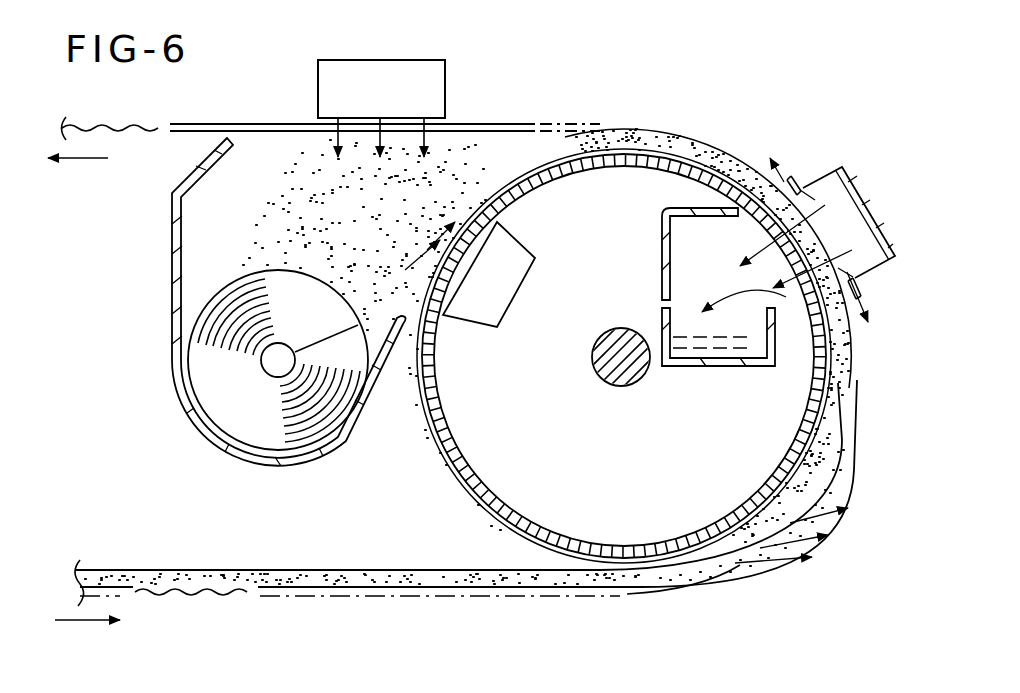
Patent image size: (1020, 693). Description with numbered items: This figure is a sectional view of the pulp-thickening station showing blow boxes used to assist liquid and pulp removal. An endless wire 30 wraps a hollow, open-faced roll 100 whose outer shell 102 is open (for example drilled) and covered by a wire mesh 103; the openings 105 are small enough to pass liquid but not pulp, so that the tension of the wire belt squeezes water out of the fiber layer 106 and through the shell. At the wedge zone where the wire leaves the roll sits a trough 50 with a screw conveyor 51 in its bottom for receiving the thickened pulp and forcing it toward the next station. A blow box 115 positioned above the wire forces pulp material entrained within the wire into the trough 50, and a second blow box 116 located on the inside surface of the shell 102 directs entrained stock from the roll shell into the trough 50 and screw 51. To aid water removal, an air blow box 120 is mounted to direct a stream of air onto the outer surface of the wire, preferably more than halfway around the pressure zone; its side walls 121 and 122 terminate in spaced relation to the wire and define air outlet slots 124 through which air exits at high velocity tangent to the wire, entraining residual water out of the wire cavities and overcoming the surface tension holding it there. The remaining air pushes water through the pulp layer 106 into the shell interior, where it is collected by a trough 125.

The wire 30 is at (197, 598).
The trough 50 is at (172, 290).
The screw conveyor 51 is at (212, 387).
The roll 100 is at (460, 489).
The outer shell 102 is at (460, 447).
The wire mesh 103 is at (448, 440).
The openings 105 is at (441, 409).
The fiber layer 106 is at (278, 572).
The blow box 115 is at (438, 80).
The second blow box 116 is at (502, 285).
The air blow box 120 is at (855, 203).
The side wall 121 is at (822, 200).
The side wall 122 is at (880, 275).
The air outlet passages or slots 124 is at (803, 360).
The trough 125 is at (688, 366).